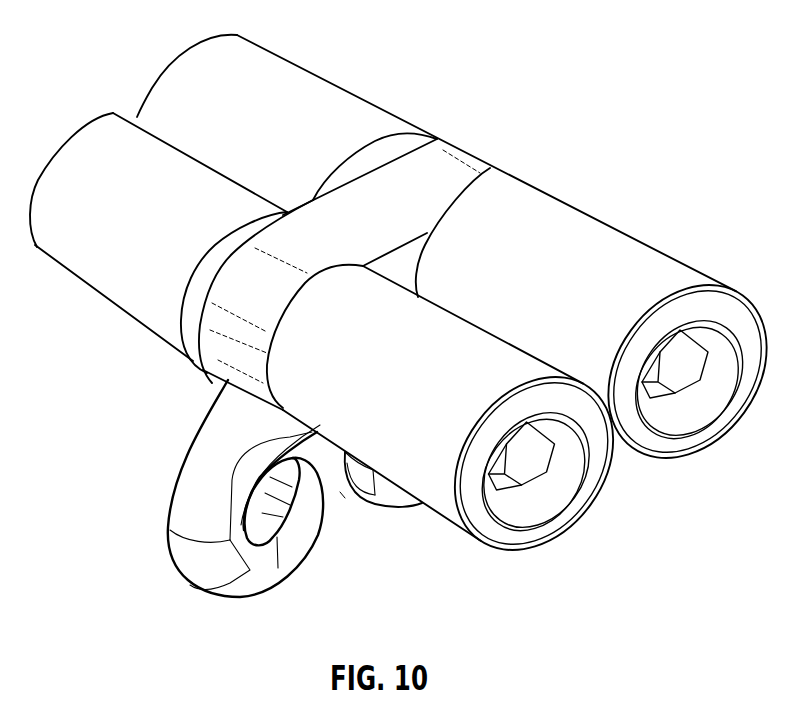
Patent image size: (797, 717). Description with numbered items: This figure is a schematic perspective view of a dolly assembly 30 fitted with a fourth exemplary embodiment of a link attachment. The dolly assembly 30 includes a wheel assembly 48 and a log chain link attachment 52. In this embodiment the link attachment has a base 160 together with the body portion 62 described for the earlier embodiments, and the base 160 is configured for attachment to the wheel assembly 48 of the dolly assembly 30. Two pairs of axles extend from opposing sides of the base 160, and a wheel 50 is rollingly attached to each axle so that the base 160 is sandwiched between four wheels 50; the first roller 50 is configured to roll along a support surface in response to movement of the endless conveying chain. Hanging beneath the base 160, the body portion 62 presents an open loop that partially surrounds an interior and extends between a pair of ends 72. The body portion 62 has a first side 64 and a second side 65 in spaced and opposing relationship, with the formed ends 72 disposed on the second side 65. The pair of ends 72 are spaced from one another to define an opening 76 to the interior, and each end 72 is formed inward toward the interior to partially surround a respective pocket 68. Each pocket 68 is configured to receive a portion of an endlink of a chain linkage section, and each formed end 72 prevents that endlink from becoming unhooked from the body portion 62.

The dolly assembly 30 is at (115, 105).
The wheel assembly 48 is at (668, 225).
The first roller 50 is at (322, 87).
The log chain link attachment 52 is at (112, 348).
The body portion 62 is at (213, 435).
The first side 64 is at (252, 428).
The second side 65 is at (420, 504).
The pocket 68 is at (250, 502).
The end 72 is at (314, 498).
The opening 76 is at (343, 503).
The base 160 is at (485, 167).